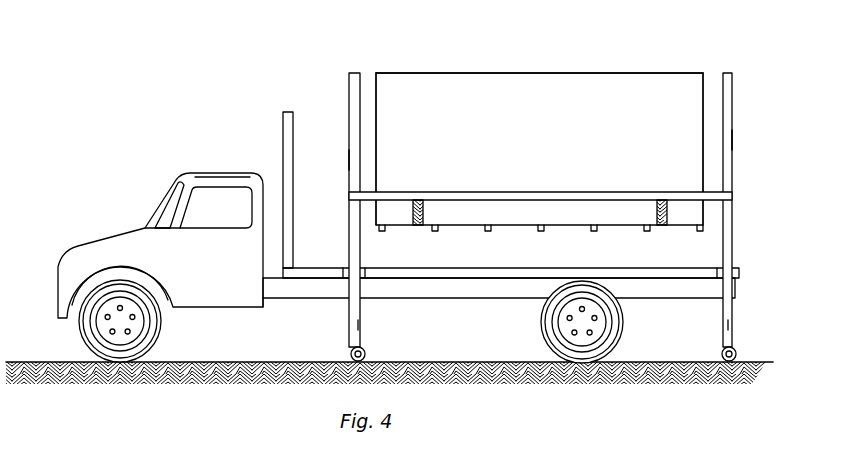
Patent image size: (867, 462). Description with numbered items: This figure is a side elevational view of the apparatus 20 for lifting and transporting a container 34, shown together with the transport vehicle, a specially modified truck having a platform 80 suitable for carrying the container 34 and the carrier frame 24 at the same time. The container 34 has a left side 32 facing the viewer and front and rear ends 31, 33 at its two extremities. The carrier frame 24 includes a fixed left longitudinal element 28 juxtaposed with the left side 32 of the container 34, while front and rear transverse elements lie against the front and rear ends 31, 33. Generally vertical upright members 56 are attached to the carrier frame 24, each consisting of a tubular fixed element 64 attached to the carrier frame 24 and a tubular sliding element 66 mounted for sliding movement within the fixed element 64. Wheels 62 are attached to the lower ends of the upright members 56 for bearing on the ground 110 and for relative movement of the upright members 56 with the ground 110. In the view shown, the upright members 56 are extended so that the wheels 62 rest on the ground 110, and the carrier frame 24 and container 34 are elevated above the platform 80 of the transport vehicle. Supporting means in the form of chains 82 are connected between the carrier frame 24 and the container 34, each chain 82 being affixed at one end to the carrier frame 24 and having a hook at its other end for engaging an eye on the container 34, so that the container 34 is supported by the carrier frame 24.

The apparatus for lifting and transporting a container 20 is at (148, 124).
The carrier frame 24 is at (585, 192).
The left longitudinal element 28 is at (500, 192).
The front end 31 is at (376, 80).
The left side 32 is at (590, 87).
The rear end 33 is at (703, 85).
The container 34 is at (500, 72).
The upright members 56 is at (349, 107).
The wheels 62 is at (353, 353).
The tubular fixed element 64 is at (349, 160).
The tubular sliding element 66 is at (360, 323).
The platform 80 is at (580, 268).
The chains 82 is at (656, 212).
The ground 110 is at (698, 362).